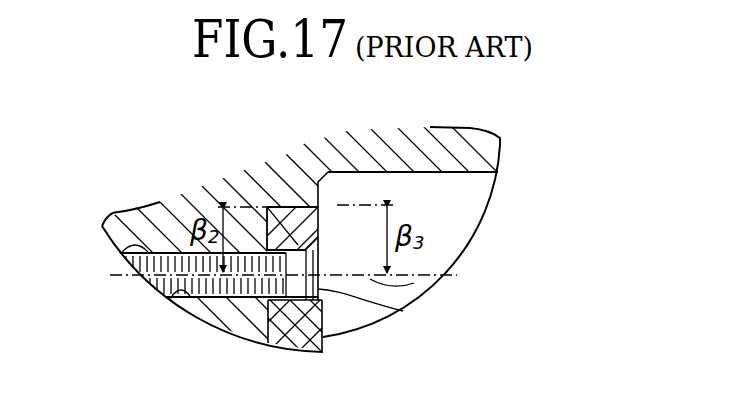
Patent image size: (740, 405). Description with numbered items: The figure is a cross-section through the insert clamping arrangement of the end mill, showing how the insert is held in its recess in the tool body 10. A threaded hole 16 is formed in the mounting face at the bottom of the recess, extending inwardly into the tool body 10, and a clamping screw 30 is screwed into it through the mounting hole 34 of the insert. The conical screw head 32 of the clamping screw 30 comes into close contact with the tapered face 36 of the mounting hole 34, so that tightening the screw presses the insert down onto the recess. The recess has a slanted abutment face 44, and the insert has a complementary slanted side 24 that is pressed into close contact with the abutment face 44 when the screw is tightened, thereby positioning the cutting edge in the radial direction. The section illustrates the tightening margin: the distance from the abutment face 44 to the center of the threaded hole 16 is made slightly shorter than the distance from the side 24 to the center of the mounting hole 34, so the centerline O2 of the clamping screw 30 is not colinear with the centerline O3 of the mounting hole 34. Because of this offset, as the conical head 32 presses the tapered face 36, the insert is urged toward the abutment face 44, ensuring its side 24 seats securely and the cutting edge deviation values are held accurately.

The tool body 10 is at (503, 143).
The threaded hole 16 is at (168, 302).
The side of the insert 24 is at (296, 205).
The clamping screw 30 is at (240, 296).
The conical screw head 32 is at (323, 337).
The mounting hole 34 is at (272, 300).
The tapered face of the mounting hole 36 is at (403, 311).
The abutment face 44 is at (342, 209).
The centerline of the clamping screw O2 is at (122, 253).
The centerline of the mounting hole O3 is at (431, 278).